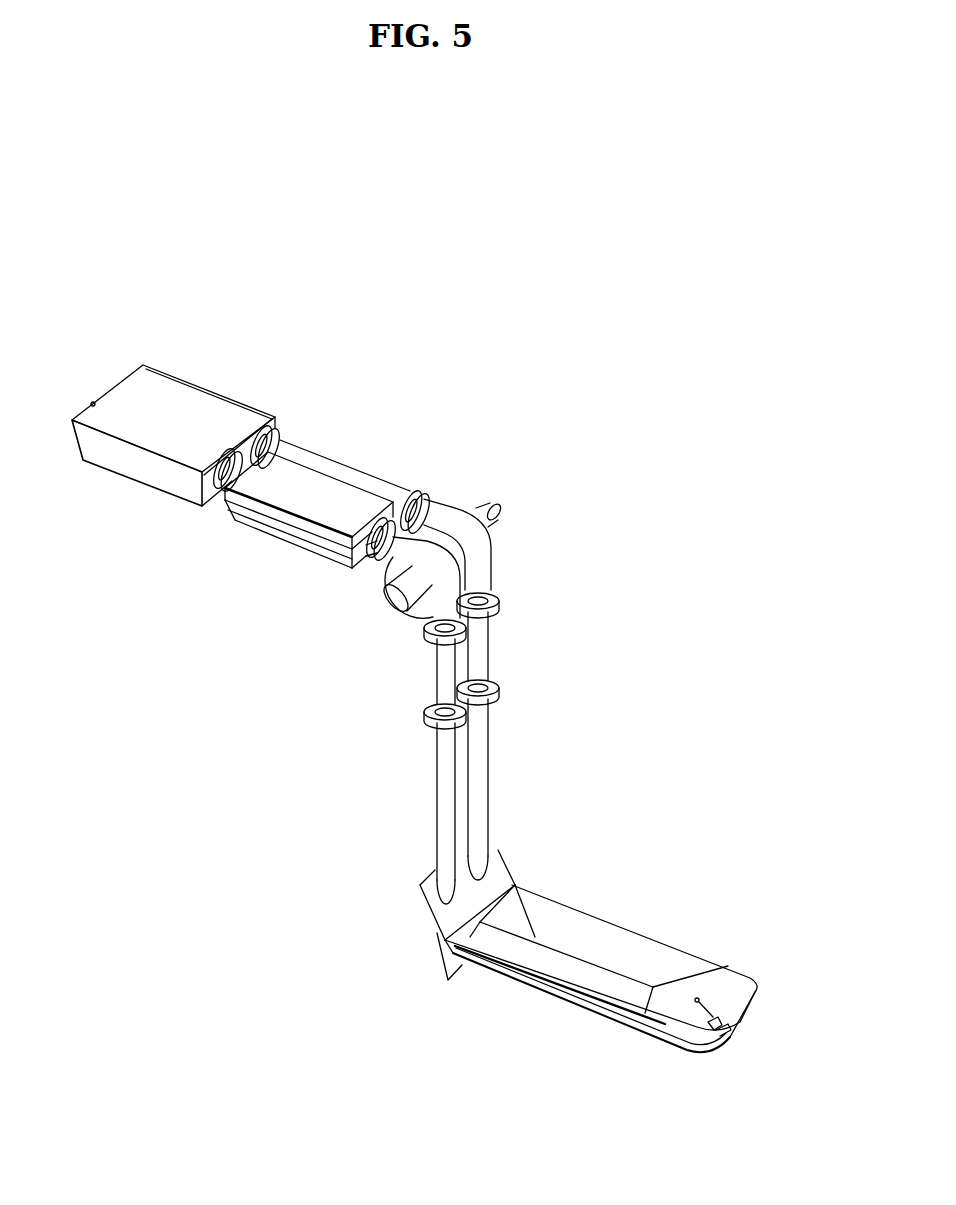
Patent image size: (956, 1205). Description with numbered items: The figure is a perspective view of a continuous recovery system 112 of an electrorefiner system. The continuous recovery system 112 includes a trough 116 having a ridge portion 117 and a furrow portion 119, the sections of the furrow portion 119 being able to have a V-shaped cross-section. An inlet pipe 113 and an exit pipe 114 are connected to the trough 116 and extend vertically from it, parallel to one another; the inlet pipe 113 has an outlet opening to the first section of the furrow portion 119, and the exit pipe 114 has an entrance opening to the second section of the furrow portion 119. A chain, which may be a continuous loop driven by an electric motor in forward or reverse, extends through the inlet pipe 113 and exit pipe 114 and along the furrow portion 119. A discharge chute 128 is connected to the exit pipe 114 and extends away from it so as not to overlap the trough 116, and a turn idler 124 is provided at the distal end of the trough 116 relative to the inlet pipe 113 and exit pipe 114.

The continuous recovery system 112 is at (452, 162).
The discharge chute 128 is at (265, 538).
The inlet pipe 113 is at (478, 762).
The exit pipe 114 is at (443, 818).
The ridge portion 117 is at (535, 937).
The furrow portion 119 is at (627, 950).
The trough 116 is at (748, 975).
The turn idler 124 is at (738, 1030).